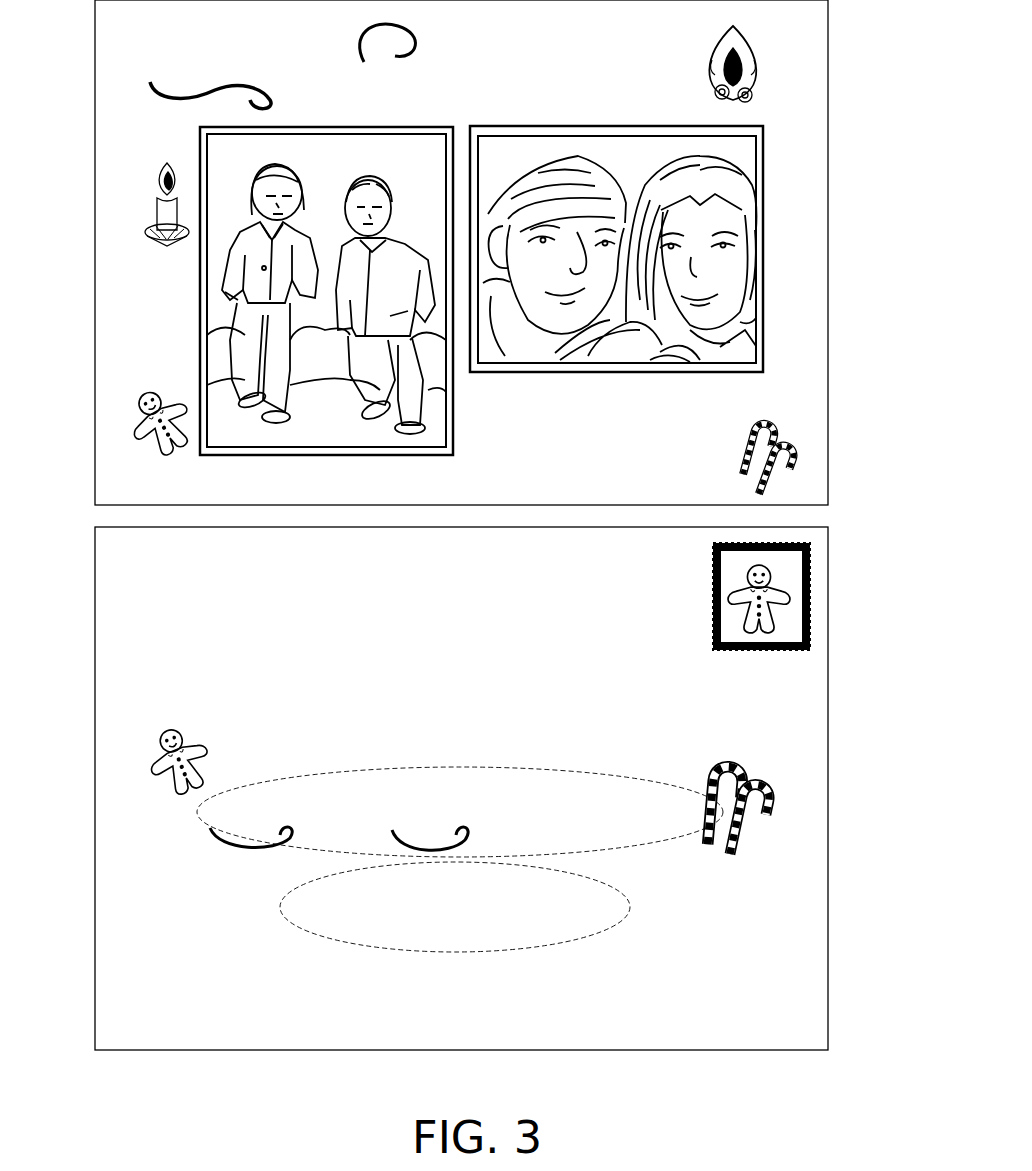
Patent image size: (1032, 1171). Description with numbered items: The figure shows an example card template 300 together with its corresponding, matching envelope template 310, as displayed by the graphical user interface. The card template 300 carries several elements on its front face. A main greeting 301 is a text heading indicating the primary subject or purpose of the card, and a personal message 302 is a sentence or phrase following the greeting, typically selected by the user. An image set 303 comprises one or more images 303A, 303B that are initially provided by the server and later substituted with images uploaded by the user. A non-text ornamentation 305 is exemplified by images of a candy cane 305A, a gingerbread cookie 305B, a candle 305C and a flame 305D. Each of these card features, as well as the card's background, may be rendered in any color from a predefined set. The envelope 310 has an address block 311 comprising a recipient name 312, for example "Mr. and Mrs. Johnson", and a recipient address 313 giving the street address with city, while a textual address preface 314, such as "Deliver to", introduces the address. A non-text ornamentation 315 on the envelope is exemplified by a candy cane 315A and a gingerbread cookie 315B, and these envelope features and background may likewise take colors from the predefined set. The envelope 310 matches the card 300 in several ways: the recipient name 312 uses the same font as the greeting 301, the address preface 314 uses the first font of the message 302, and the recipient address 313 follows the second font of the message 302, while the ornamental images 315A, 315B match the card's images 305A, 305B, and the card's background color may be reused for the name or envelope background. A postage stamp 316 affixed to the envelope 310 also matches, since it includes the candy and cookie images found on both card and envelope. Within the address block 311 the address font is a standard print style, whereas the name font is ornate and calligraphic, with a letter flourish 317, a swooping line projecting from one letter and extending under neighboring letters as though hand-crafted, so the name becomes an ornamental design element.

The card template 300 is at (851, 34).
The main greeting 301 is at (165, 60).
The letter flourish 317 is at (235, 100).
The candle 305C is at (155, 218).
The image 303B is at (203, 295).
The gingerbread cookie 305B is at (140, 410).
The flame 305D is at (765, 62).
The image set 303 is at (479, 290).
The image 303A is at (766, 245).
The personal message 302 is at (776, 389).
The non-text ornamentation 305 is at (838, 443).
The candy cane 305A is at (800, 452).
The envelope template 310 is at (851, 555).
The postage stamp 316 is at (812, 598).
The address block 311 is at (474, 797).
The textual address preface 314 is at (225, 732).
The recipient name 312 is at (667, 842).
The recipient address 313 is at (630, 907).
The non-text ornamentation 315 is at (474, 775).
The candy cane 315A is at (155, 747).
The gingerbread cookie 315B is at (737, 770).